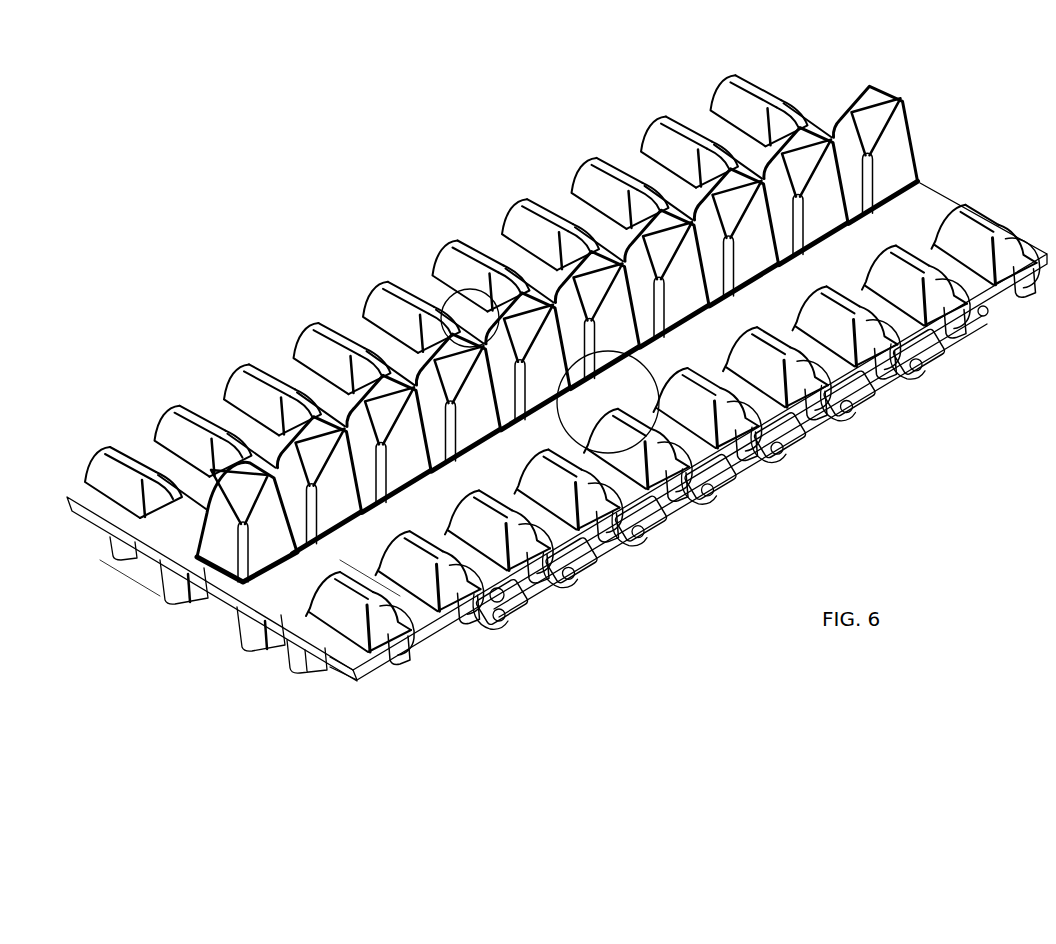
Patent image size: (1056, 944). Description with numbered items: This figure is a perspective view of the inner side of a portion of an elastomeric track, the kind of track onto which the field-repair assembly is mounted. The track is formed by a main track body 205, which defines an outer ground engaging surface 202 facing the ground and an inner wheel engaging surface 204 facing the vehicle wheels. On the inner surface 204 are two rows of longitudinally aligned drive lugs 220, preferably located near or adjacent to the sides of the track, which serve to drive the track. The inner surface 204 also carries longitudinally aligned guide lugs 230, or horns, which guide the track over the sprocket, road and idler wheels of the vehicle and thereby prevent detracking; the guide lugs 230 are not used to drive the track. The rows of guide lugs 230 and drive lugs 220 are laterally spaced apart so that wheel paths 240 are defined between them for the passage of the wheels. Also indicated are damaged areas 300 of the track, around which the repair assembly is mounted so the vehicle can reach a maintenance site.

The outer ground engaging surface 202 is at (290, 682).
The inner wheel engaging surface 204 is at (362, 240).
The main track body 205 is at (358, 676).
The drive lugs 220 is at (721, 78).
The guide lugs 230 is at (912, 102).
The wheel paths 240 is at (263, 552).
The damaged area 300 is at (481, 289).